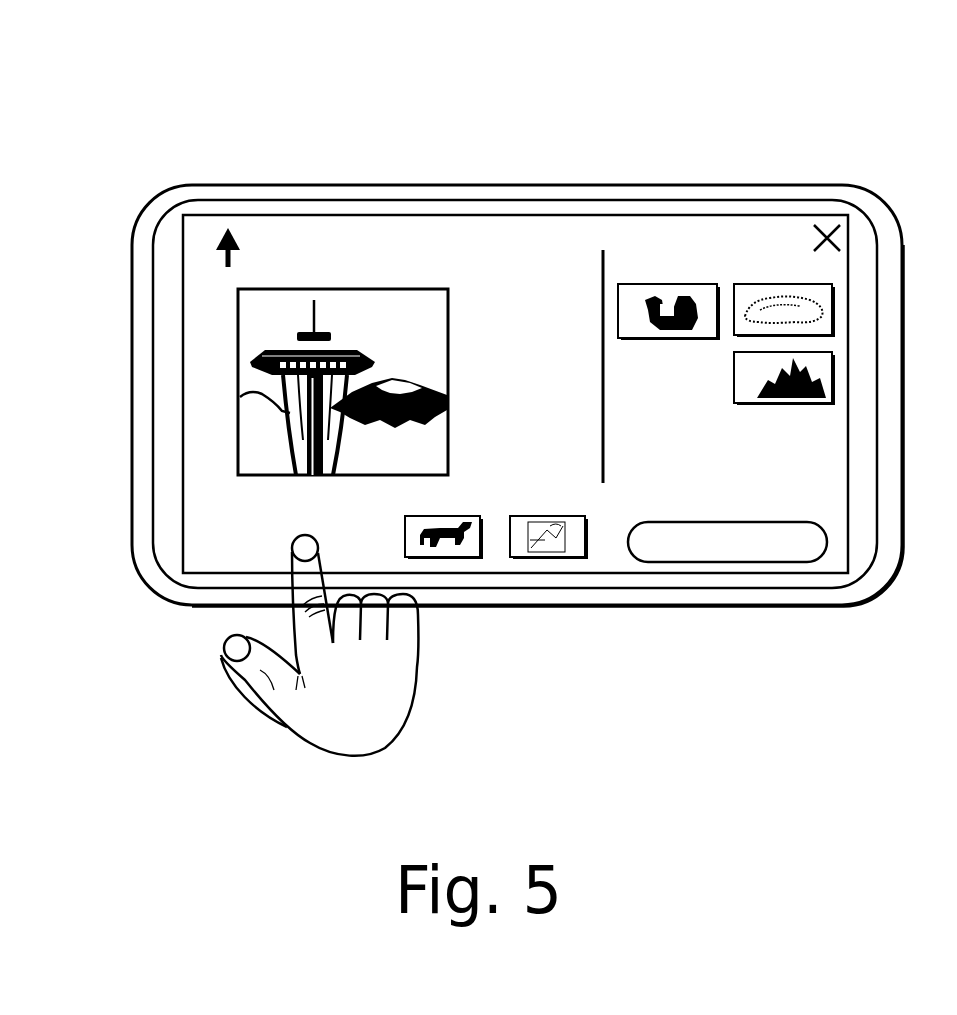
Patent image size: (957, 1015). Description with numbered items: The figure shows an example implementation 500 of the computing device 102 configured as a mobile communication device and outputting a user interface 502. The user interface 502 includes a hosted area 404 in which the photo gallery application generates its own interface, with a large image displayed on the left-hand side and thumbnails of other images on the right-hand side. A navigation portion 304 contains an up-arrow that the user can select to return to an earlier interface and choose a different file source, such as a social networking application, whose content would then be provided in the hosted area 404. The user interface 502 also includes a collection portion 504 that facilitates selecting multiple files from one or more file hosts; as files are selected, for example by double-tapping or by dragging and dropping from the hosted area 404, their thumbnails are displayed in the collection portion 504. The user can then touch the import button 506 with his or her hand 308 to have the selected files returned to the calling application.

The example implementation 500 is at (151, 84).
The computing device 102 is at (514, 183).
The navigation portion 304 is at (192, 236).
The hosted area 404 is at (197, 289).
The user interface 502 is at (533, 250).
The collection portion 504 is at (195, 533).
The import button 506 is at (746, 566).
The hand 308 is at (384, 722).